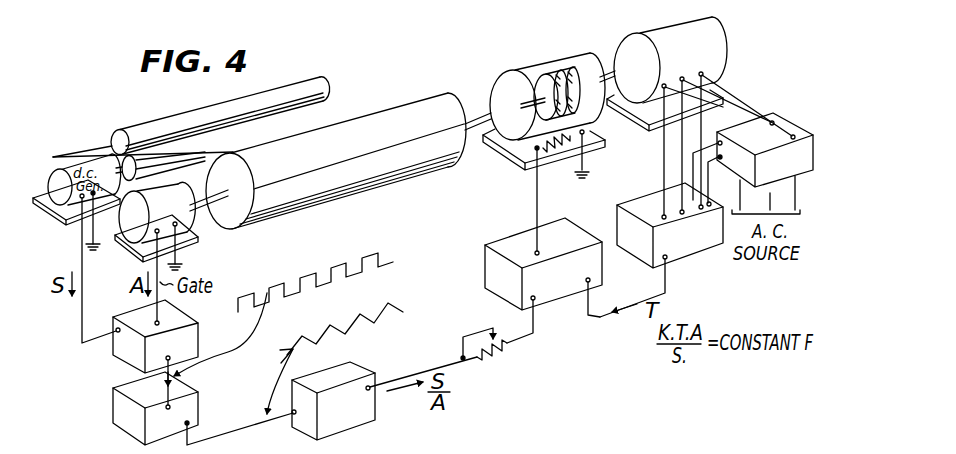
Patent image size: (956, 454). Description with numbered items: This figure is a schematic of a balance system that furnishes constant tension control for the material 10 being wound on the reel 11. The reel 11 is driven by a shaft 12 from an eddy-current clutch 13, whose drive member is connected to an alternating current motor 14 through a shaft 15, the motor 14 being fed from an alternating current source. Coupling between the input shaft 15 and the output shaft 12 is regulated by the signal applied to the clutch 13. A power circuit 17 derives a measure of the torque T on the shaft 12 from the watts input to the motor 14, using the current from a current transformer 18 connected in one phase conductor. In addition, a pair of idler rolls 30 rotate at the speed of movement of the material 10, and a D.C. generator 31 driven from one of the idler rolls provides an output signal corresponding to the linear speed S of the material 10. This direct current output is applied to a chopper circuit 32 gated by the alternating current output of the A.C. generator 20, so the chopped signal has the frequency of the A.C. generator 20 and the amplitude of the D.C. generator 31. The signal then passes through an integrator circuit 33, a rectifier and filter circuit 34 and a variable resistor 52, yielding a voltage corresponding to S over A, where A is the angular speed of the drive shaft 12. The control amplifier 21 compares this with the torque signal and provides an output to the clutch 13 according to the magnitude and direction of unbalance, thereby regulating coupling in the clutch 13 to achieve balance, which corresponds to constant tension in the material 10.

The material 10 is at (369, 110).
The reel 11 is at (401, 173).
The shaft 12 is at (483, 113).
The eddy-current clutch 13 is at (516, 72).
The motor 14 is at (710, 44).
The shaft 15 is at (603, 68).
The power circuit 17 is at (616, 208).
The current transformer 18 is at (792, 127).
The A.C. generator 20 is at (181, 223).
The control amplifier 21 is at (488, 260).
The idler rolls 30 is at (115, 135).
The D.C. generator 31 is at (54, 178).
The chopper circuit 32 is at (194, 342).
The integrator circuit 33 is at (195, 396).
The rectifier and filter circuit 34 is at (355, 373).
The variable resistor 52 is at (506, 344).